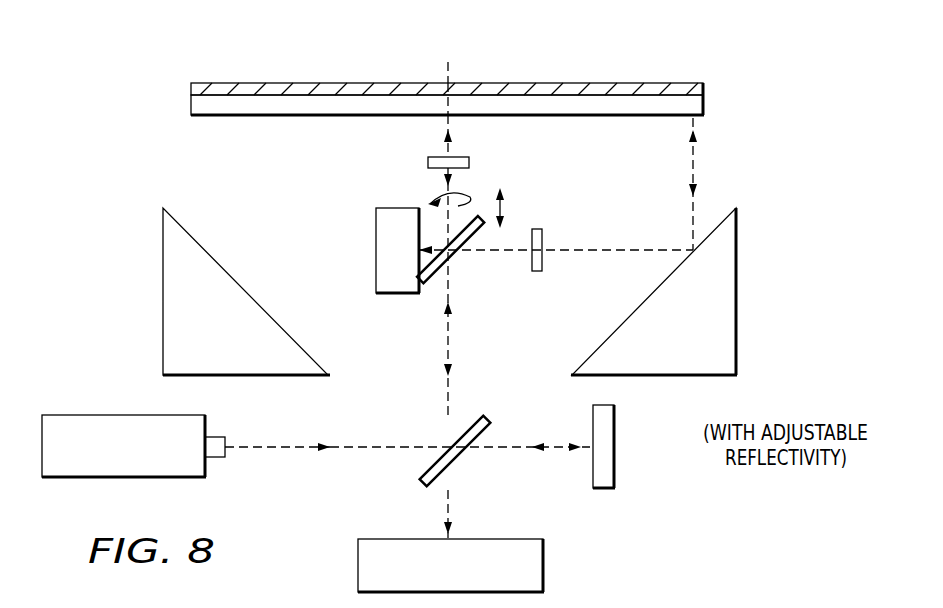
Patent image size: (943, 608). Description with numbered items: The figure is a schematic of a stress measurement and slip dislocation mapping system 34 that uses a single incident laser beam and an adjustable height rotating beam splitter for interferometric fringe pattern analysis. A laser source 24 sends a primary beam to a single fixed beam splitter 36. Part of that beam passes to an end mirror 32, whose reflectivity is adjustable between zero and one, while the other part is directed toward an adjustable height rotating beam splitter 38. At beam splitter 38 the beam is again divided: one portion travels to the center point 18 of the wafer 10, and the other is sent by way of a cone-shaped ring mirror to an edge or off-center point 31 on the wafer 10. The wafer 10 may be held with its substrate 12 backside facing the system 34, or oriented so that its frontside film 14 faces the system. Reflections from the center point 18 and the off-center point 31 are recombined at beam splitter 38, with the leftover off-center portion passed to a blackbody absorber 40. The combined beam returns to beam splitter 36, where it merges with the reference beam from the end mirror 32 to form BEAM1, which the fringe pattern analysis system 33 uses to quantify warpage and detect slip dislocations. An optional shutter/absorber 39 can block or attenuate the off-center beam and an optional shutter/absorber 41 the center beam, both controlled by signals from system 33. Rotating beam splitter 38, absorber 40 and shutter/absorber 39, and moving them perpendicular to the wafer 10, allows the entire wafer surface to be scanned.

The wafer 10 is at (419, 96).
The substrate 12 is at (263, 117).
The frontside film 14 is at (245, 83).
The center point 18 is at (448, 117).
The laser source 24 is at (207, 470).
The edge or off-center point 31 is at (703, 117).
The end mirror 32 is at (600, 489).
The fringe pattern analysis system 33 is at (544, 570).
The stress measurement and slip dislocation mapping system 34 is at (93, 231).
The fixed beam splitter 36 is at (462, 432).
The adjustable height rotating beam splitter 38 is at (468, 256).
The shutter/absorber 39 is at (543, 236).
The blackbody absorber 40 is at (376, 283).
The shutter/absorber 41 is at (428, 162).